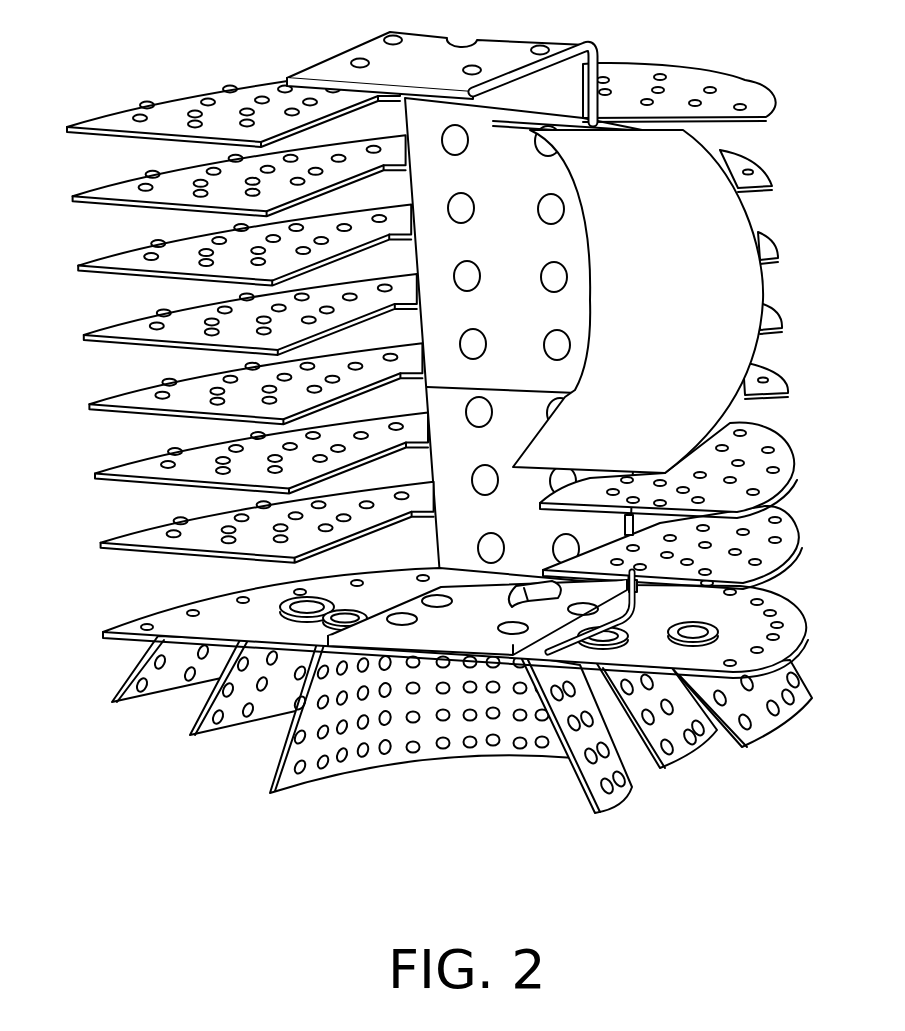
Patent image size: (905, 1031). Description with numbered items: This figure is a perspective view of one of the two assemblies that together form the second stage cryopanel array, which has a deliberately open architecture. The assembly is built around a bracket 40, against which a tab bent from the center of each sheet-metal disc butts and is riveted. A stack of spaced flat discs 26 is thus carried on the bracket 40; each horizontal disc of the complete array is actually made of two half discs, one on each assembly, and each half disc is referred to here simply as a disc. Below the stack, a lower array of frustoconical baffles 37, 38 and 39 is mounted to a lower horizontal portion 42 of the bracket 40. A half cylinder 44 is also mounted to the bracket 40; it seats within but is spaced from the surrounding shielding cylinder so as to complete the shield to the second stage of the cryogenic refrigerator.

The spaced flat discs 26 is at (83, 341).
The frustoconical baffle 37 is at (112, 703).
The frustoconical baffle 38 is at (190, 736).
The frustoconical baffle 39 is at (462, 628).
The bracket 40 is at (590, 44).
The lower horizontal portion 42 is at (480, 613).
The half cylinder 44 is at (751, 279).